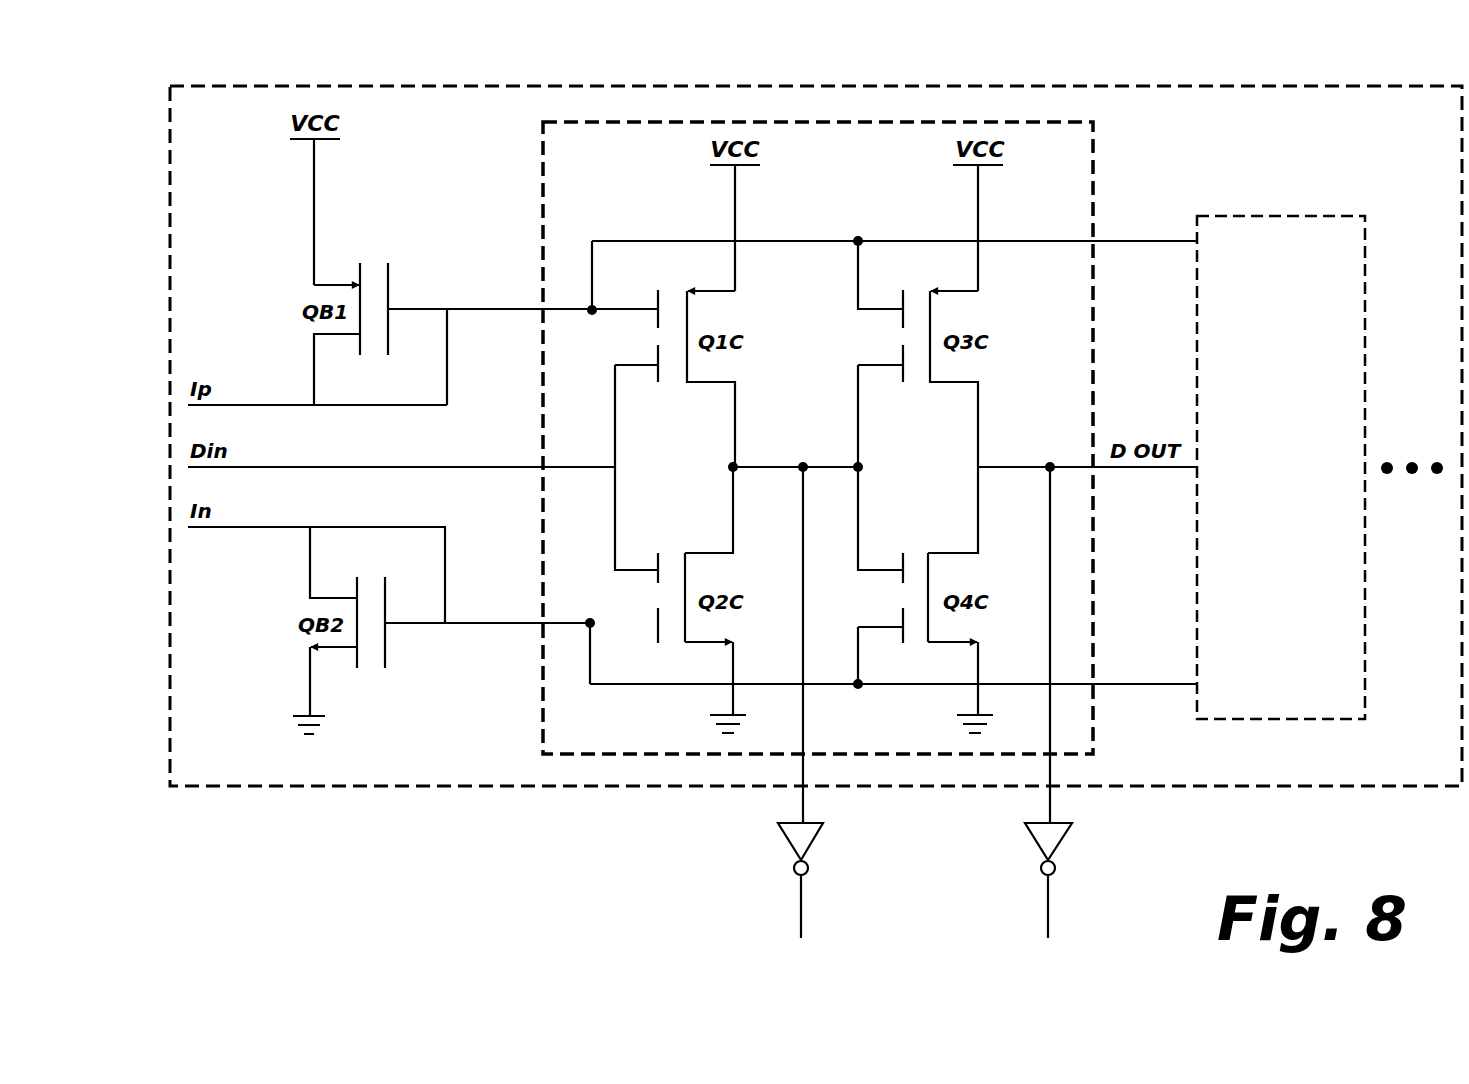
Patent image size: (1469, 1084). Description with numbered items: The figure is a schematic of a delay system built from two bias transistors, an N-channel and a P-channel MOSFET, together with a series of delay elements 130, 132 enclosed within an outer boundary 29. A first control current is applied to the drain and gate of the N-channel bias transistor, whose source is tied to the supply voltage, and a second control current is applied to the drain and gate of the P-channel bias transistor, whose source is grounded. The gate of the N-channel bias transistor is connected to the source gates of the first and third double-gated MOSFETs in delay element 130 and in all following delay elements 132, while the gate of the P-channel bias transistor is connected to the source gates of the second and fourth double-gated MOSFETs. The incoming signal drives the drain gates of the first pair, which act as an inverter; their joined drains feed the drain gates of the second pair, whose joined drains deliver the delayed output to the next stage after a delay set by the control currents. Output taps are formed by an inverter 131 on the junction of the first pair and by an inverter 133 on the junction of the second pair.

The output buffer circuit 29 is at (465, 786).
The delay element 130 is at (1093, 712).
The inverter 131 is at (812, 843).
The delay element 132 is at (1252, 719).
The inverter 133 is at (1059, 843).